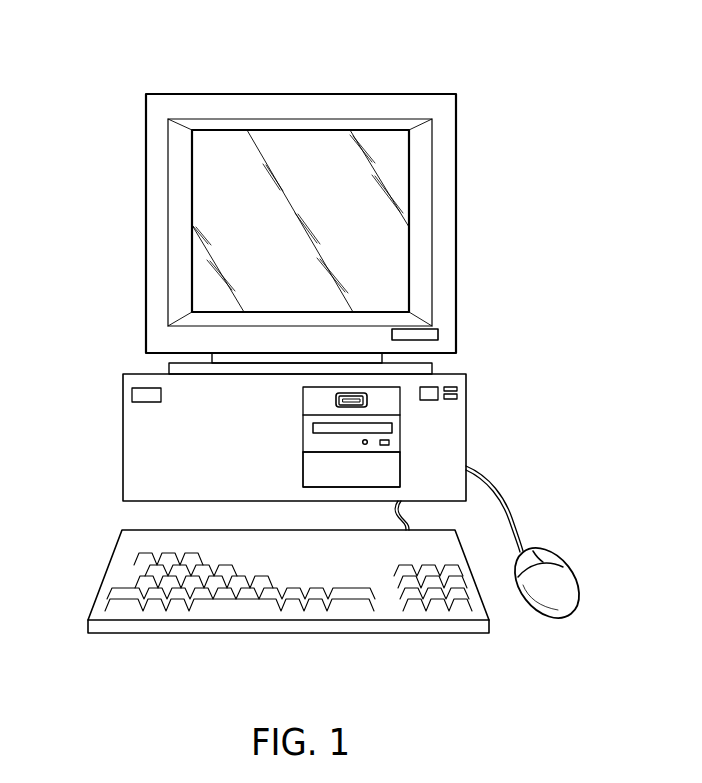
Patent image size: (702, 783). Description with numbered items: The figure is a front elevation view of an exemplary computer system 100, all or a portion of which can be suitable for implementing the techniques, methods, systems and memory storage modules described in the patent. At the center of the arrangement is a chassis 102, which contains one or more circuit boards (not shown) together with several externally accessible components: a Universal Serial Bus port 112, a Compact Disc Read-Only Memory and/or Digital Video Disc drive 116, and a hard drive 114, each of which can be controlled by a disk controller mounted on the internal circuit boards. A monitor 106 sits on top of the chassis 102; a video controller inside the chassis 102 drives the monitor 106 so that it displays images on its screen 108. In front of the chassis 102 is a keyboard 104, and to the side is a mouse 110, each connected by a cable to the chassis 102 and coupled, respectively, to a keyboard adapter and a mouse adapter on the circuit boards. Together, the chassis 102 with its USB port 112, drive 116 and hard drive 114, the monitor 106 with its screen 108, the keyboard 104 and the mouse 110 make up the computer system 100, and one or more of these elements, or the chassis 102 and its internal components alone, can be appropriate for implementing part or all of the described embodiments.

The computer system 100 is at (450, 72).
The chassis 102 is at (123, 438).
The keyboard 104 is at (108, 563).
The monitor 106 is at (209, 94).
The screen 108 is at (232, 224).
The mouse 110 is at (562, 577).
The Universal Serial Bus (USB) port 112 is at (367, 396).
The hard drive 114 is at (393, 467).
The Compact Disc Read-Only Memory (CD-ROM) and/or Digital Video Disc (DVD) drive 116 is at (393, 433).